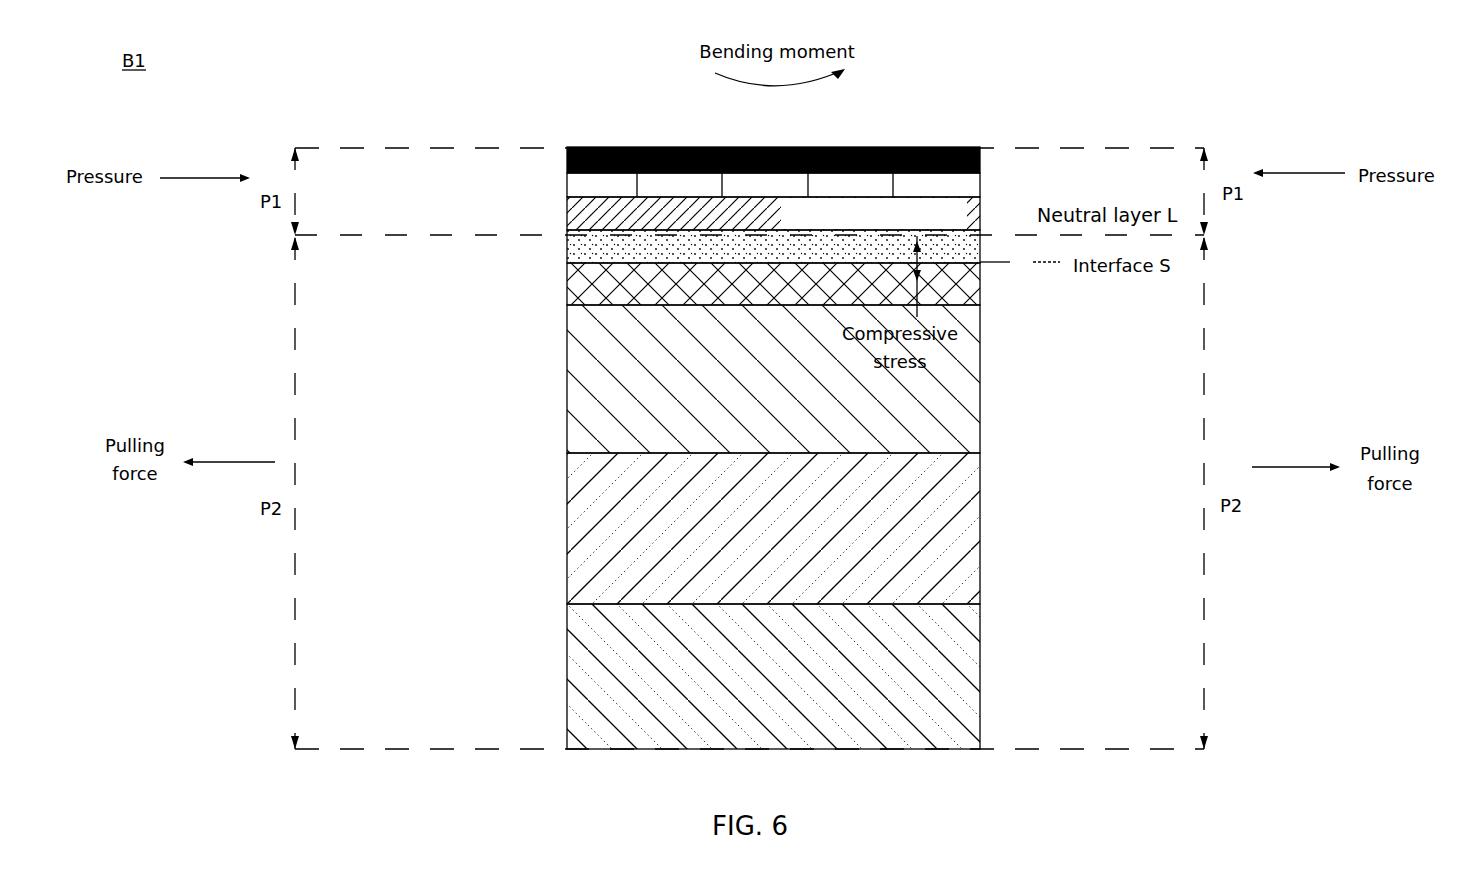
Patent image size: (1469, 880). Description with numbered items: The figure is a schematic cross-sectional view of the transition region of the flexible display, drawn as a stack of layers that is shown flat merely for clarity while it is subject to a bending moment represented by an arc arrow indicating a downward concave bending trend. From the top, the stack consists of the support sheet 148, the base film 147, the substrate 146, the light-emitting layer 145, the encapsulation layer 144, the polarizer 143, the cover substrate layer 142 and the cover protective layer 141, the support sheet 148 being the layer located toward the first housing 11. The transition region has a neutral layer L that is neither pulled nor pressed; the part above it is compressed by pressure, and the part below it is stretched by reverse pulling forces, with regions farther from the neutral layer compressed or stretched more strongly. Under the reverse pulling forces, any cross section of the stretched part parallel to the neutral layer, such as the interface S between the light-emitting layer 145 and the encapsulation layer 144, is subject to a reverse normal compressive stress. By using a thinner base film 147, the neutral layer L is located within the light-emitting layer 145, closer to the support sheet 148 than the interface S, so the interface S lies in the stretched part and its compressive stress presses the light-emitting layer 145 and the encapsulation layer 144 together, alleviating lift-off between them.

The first housing 11 is at (772, 448).
The cover protective layer 141 is at (625, 673).
The cover substrate layer 142 is at (625, 529).
The polarizer 143 is at (625, 403).
The encapsulation layer 144 is at (652, 305).
The light-emitting layer 145 is at (651, 262).
The substrate 146 is at (567, 217).
The base film 147 is at (651, 182).
The support sheet 148 is at (651, 143).